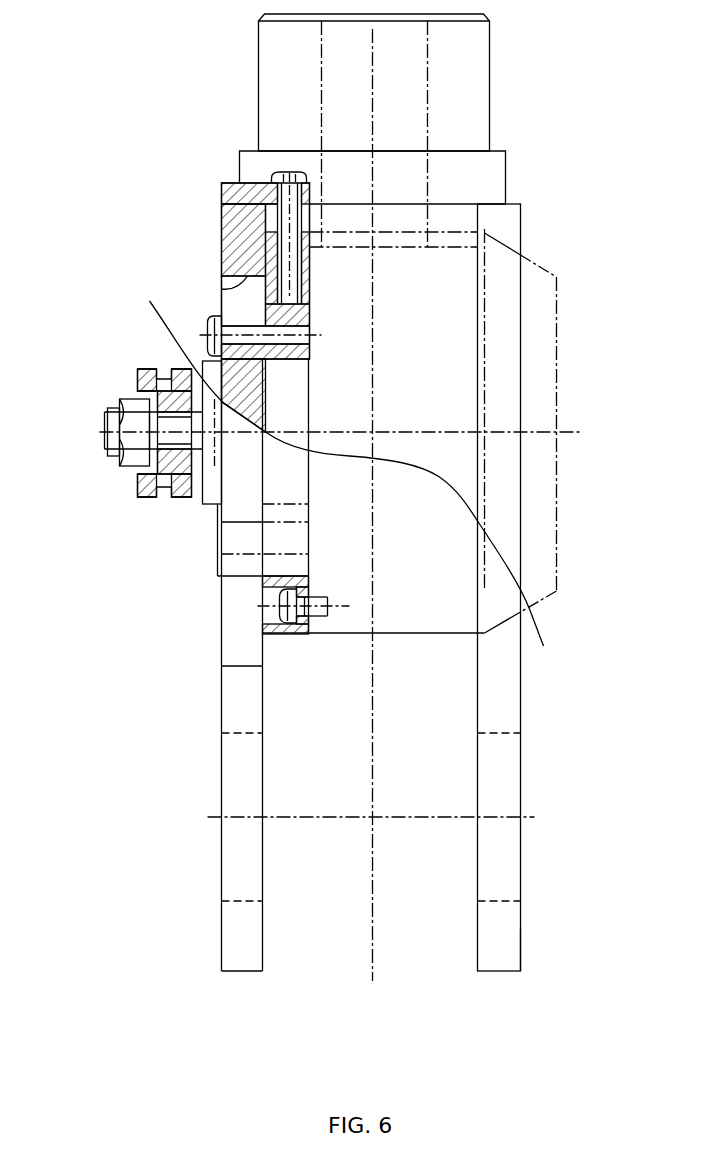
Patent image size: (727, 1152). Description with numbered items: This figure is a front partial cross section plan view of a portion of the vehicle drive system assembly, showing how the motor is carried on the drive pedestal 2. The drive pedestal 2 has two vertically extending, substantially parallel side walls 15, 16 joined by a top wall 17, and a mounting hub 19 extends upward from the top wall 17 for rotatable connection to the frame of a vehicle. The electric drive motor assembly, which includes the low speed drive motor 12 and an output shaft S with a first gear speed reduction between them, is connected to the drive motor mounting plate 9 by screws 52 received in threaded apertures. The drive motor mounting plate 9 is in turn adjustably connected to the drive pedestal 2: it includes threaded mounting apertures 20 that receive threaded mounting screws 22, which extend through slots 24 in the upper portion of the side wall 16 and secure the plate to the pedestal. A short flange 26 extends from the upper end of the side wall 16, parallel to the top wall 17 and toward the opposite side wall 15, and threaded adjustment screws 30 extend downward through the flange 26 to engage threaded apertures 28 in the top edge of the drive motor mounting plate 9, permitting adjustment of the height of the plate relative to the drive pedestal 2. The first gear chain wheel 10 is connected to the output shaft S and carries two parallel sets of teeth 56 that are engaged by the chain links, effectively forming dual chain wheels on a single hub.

The drive pedestal 2 is at (519, 944).
The drive motor mounting plate 9 is at (240, 212).
The first gear chain wheel 10 is at (138, 378).
The low speed drive motor 12 is at (450, 618).
The side wall 15 is at (497, 962).
The side wall 16 is at (238, 962).
The top wall 17 is at (457, 223).
The mounting hub 19 is at (477, 90).
The threaded mounting apertures 20 is at (267, 312).
The threaded mounting screws 22 is at (217, 318).
The slots 24 is at (223, 288).
The short flange 26 is at (223, 190).
The threaded apertures 28 is at (223, 248).
The threaded adjustment screws 30 is at (275, 173).
The screws 52 is at (285, 595).
The teeth 56 is at (172, 500).
The output shaft S is at (105, 431).